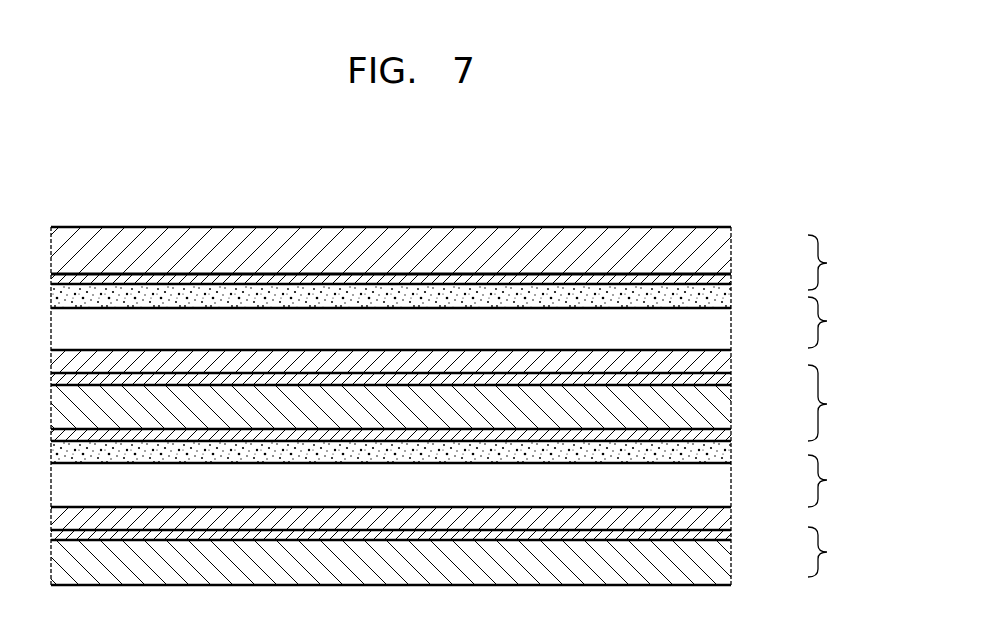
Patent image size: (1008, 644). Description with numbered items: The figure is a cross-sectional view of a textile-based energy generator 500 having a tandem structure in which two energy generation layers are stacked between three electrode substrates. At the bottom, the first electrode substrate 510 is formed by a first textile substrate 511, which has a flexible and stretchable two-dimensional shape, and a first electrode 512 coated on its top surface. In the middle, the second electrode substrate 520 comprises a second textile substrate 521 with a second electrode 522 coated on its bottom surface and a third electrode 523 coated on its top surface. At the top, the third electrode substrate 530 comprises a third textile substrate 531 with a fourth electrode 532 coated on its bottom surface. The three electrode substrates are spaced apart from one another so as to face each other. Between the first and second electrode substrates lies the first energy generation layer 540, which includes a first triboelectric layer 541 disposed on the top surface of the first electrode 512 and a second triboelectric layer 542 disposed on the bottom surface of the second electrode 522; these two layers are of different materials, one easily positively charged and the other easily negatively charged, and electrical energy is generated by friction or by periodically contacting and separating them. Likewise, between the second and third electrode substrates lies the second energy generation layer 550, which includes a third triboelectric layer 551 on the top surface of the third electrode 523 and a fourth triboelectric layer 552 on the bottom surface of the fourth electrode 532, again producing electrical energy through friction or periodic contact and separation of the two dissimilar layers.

The textile-based energy generator 500 is at (663, 180).
The first electrode substrate 510 is at (841, 552).
The first textile substrate 511 is at (716, 565).
The first electrode 512 is at (716, 535).
The second electrode substrate 520 is at (841, 403).
The second textile substrate 521 is at (716, 406).
The second electrode 522 is at (716, 436).
The third electrode 523 is at (716, 379).
The third electrode substrate 530 is at (841, 262).
The third textile substrate 531 is at (713, 247).
The fourth electrode 532 is at (716, 280).
The first energy generation layer 540 is at (841, 481).
The first triboelectric layer 541 is at (712, 518).
The second triboelectric layer 542 is at (720, 452).
The second energy generation layer 550 is at (841, 322).
The third triboelectric layer 551 is at (716, 362).
The fourth triboelectric layer 552 is at (716, 298).